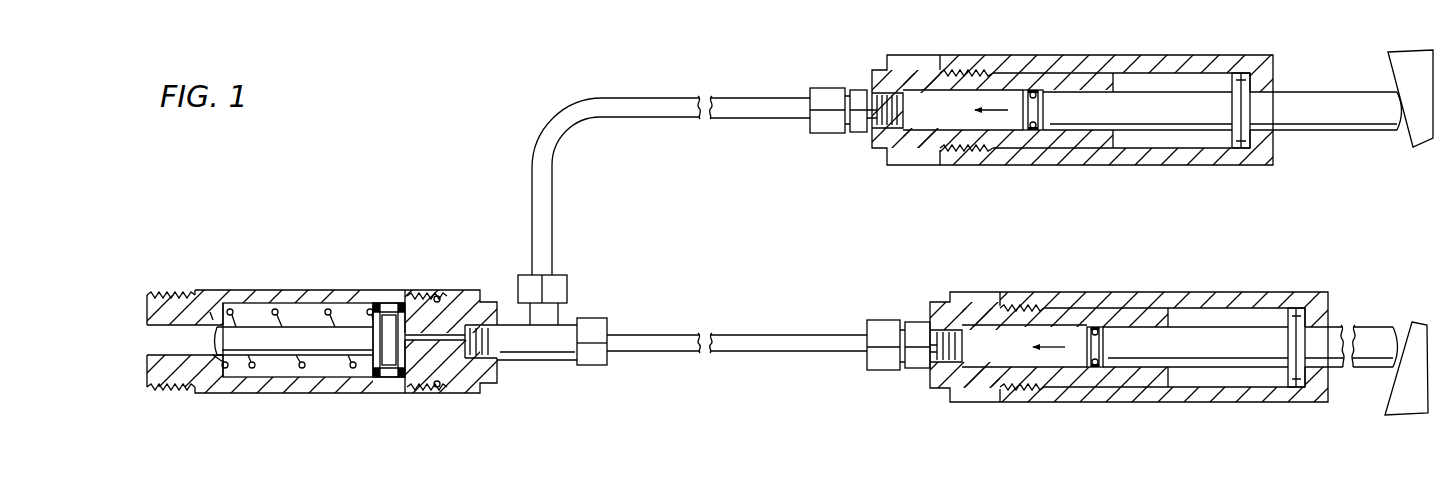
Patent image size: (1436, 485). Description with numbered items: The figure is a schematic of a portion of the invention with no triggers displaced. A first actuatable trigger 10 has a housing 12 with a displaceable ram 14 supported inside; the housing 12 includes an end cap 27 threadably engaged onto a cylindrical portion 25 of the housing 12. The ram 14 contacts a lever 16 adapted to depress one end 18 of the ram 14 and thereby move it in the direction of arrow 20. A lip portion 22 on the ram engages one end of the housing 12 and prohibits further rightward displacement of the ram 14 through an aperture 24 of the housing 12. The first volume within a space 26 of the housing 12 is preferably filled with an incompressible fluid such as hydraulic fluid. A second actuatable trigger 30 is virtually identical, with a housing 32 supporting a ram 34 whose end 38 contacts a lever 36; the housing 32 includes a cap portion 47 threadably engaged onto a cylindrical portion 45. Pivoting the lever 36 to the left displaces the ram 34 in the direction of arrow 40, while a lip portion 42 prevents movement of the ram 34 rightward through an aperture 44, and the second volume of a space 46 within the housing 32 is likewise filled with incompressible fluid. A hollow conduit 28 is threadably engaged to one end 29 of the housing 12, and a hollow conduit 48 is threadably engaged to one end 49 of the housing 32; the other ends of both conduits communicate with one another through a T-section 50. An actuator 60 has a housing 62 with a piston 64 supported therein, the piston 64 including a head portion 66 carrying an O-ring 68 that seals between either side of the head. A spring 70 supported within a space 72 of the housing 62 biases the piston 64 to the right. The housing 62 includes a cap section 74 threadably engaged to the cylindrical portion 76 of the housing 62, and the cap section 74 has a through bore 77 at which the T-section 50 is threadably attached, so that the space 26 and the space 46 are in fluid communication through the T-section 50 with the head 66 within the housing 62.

The first actuatable trigger 10 is at (1101, 131).
The housing 12 is at (1044, 168).
The displaceable ram 14 is at (1167, 117).
The lever 16 is at (1403, 67).
The end of ram 18 is at (1390, 117).
The arrow 20 is at (993, 110).
The lip portion 22 is at (1240, 145).
The aperture 24 is at (1273, 127).
The cylindrical portion 25 is at (997, 153).
The space 26 is at (915, 123).
The end cap 27 is at (920, 150).
The hollow conduit 28 is at (587, 118).
The end of housing 29 is at (877, 118).
The second actuatable trigger 30 is at (1147, 356).
The housing 32 is at (1087, 403).
The ram 34 is at (1197, 340).
The lever 36 is at (1413, 340).
The end of ram 38 is at (1390, 350).
The arrow 40 is at (1048, 347).
The lip portion 42 is at (1295, 317).
The aperture 44 is at (1337, 330).
The cylindrical portion 45 is at (1123, 393).
The space 46 is at (950, 387).
The cap portion 47 is at (967, 302).
The hollow conduit 48 is at (733, 338).
The end of housing 49 is at (927, 335).
The T-section 50 is at (540, 348).
The actuator 60 is at (322, 323).
The housing 62 is at (317, 290).
The piston 64 is at (275, 345).
The head portion 66 is at (385, 377).
The O-ring 68 is at (387, 307).
The spring 70 is at (237, 318).
The space 72 is at (262, 312).
The cap section 74 is at (460, 297).
The cylindrical portion 76 is at (365, 292).
The through bore 77 is at (442, 340).